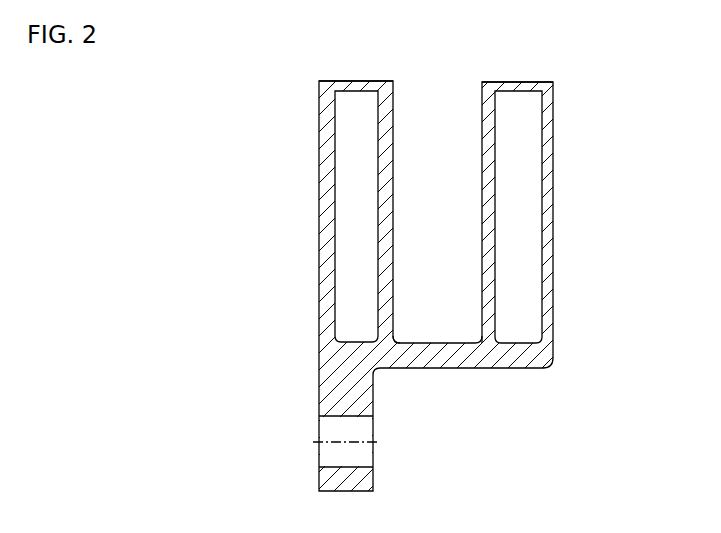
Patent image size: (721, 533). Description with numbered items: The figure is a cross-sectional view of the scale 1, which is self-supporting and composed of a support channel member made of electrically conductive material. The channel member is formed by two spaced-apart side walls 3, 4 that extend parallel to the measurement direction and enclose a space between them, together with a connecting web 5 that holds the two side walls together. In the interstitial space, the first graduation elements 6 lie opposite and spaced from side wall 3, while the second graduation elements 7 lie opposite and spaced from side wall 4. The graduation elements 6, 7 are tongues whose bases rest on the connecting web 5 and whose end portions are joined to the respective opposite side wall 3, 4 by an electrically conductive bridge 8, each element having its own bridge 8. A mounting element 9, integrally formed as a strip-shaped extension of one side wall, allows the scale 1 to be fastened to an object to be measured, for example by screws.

The scale 1 is at (616, 105).
The side wall 3 is at (326, 164).
The side wall 4 is at (548, 175).
The connecting web 5 is at (447, 350).
The first graduation elements 6 is at (385, 251).
The second graduation elements 7 is at (495, 257).
The bridge 8 is at (378, 82).
The mounting element 9 is at (335, 478).